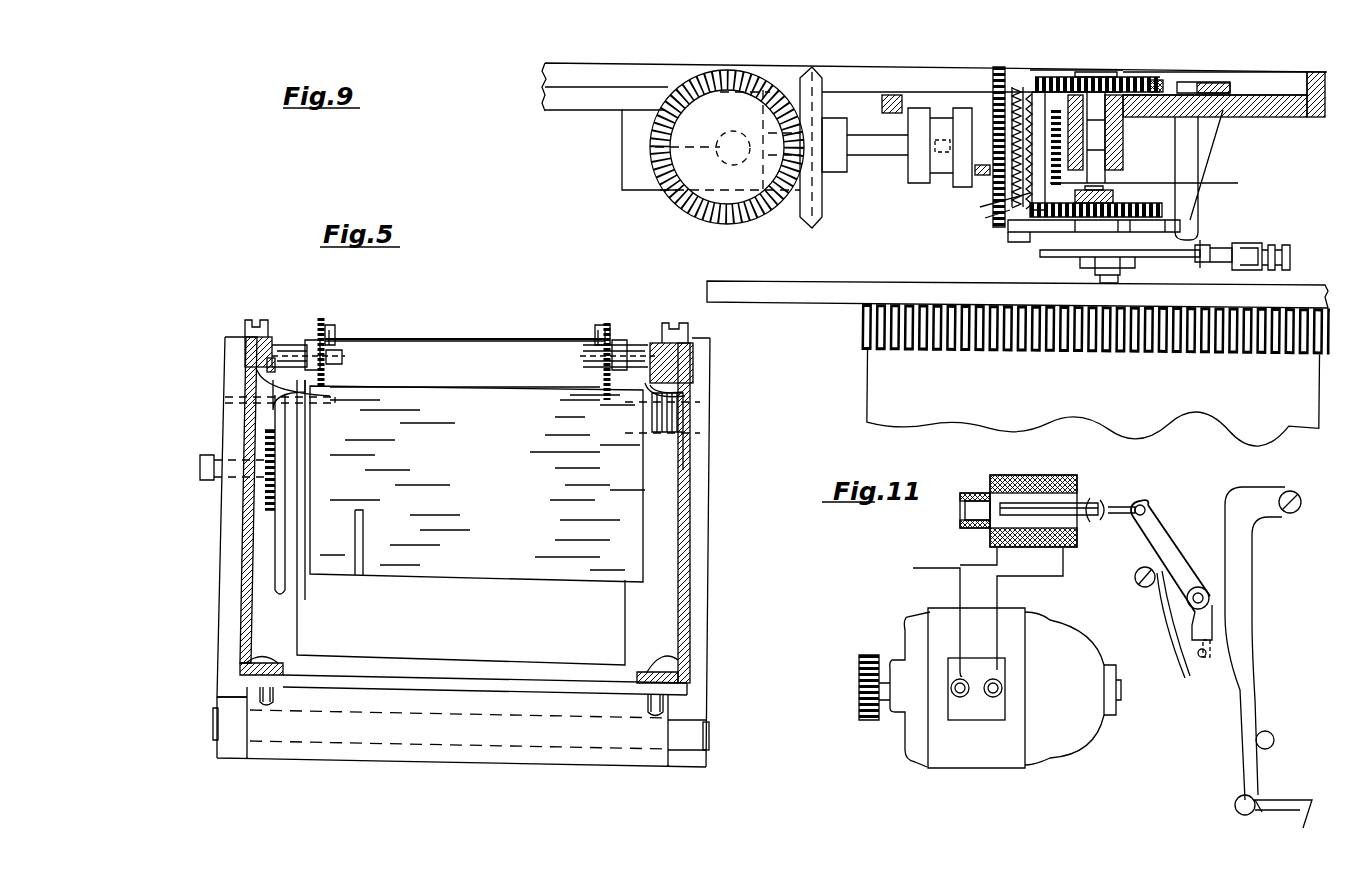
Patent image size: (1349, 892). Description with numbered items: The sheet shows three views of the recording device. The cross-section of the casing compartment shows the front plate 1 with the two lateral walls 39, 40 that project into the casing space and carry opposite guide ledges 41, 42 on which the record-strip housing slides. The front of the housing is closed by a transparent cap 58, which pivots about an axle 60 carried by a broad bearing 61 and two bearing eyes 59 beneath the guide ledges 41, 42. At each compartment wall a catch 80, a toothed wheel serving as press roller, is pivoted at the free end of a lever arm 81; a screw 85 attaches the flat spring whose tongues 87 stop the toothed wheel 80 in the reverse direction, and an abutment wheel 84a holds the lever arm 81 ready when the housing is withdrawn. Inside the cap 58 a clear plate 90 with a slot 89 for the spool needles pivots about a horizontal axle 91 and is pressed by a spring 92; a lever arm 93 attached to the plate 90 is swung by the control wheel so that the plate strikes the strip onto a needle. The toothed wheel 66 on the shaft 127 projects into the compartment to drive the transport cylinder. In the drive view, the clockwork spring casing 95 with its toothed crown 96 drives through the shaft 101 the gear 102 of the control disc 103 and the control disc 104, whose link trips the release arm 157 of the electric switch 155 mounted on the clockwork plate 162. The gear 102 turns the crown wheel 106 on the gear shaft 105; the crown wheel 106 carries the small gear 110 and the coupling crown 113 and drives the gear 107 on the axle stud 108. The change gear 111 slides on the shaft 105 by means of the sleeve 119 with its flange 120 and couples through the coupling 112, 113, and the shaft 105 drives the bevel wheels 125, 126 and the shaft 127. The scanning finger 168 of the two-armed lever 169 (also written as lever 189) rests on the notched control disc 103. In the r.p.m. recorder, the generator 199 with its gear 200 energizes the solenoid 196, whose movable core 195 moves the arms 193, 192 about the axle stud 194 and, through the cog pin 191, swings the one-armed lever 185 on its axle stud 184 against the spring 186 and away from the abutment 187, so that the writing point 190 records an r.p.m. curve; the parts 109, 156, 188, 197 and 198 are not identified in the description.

In FIG. 9, the front plate 1 is at (858, 62).
In FIG. 5, the lateral wall 39 is at (690, 543).
In FIG. 5, the lateral wall 40 is at (246, 537).
In FIG. 5, the guide ledge 41 is at (680, 662).
In FIG. 5, the guide ledge 42 is at (244, 663).
In FIG. 5, the cap 58 is at (221, 618).
In FIG. 5, the bearing eyes 59 is at (217, 745).
In FIG. 5, the axle 60 is at (712, 730).
In FIG. 5, the broad bearing 61 is at (500, 763).
In FIG. 5, the toothed wheel 66 is at (265, 497).
In FIG. 5, the catch 80 is at (320, 318).
In FIG. 5, the lever arm 81 is at (262, 338).
In FIG. 5, the abutment wheel 84a is at (280, 388).
In FIG. 5, the screw 85 is at (293, 343).
In FIG. 5, the tongues 87 is at (332, 328).
In FIG. 5, the slot 89 is at (359, 578).
In FIG. 5, the plate 90 is at (575, 580).
In FIG. 5, the horizontal axle 91 is at (225, 402).
In FIG. 5, the spring 92 is at (690, 438).
In FIG. 5, the lever arm 93 is at (283, 555).
In FIG. 9, the spring casing 95 is at (1165, 395).
In FIG. 9, the toothed crown 96 is at (862, 322).
In FIG. 9, the shaft 101 is at (1090, 270).
In FIG. 9, the gear 102 is at (1162, 210).
In FIG. 9, the control disc 103 is at (1008, 235).
In FIG. 9, the control disc 104 is at (1040, 253).
In FIG. 9, the gear shaft 105 is at (883, 150).
In FIG. 9, the crown wheel 106 is at (995, 202).
In FIG. 9, the gear 107 is at (1158, 80).
In FIG. 9, the axle stud 108 is at (1100, 72).
In FIG. 9, the frame bar 109 is at (1125, 137).
In FIG. 9, the small gear 110 is at (1160, 183).
In FIG. 9, the change gear 111 is at (980, 214).
In FIG. 9, the coupling 112 is at (1014, 87).
In FIG. 9, the coupling crown 113 is at (1040, 90).
In FIG. 9, the sleeve 119 is at (993, 115).
In FIG. 9, the circular flange 120 is at (928, 120).
In FIG. 9, the bevel wheel 125 is at (805, 213).
In FIG. 9, the bevel wheel 126 is at (690, 210).
In FIG. 5, the shaft 127 is at (207, 455).
In FIG. 9, the shaft 127 is at (655, 151).
In FIG. 9, the electric switch 155 is at (1275, 258).
In FIG. 9, the coupling 156 is at (1215, 245).
In FIG. 9, the release arm 157 is at (1240, 252).
In FIG. 9, the plate 162 is at (830, 290).
In FIG. 9, the scanning finger 168 is at (1205, 160).
In FIG. 9, the two-armed lever 169 is at (1215, 82).
In FIG. 11, the axle stud 184 is at (1300, 500).
In FIG. 11, the one-armed lever 185 is at (1245, 580).
In FIG. 11, the spring 186 is at (1168, 607).
In FIG. 11, the abutment 187 is at (1270, 731).
In FIG. 11, the pivot 188 is at (1235, 808).
In FIG. 11, the two-armed lever 189 is at (1280, 786).
In FIG. 11, the writing point 190 is at (1281, 822).
In FIG. 11, the cog pin 191 is at (1199, 656).
In FIG. 11, the lever arm 192 is at (1197, 620).
In FIG. 11, the second arm 193 is at (1155, 528).
In FIG. 11, the axle stud 194 is at (1092, 498).
In FIG. 11, the movable solenoid core 195 is at (968, 512).
In FIG. 11, the solenoid 196 is at (1010, 475).
In FIG. 11, the wire 197 is at (935, 578).
In FIG. 11, the wire 198 is at (1063, 578).
In FIG. 11, the generator 199 is at (1060, 745).
In FIG. 11, the gear 200 is at (869, 655).